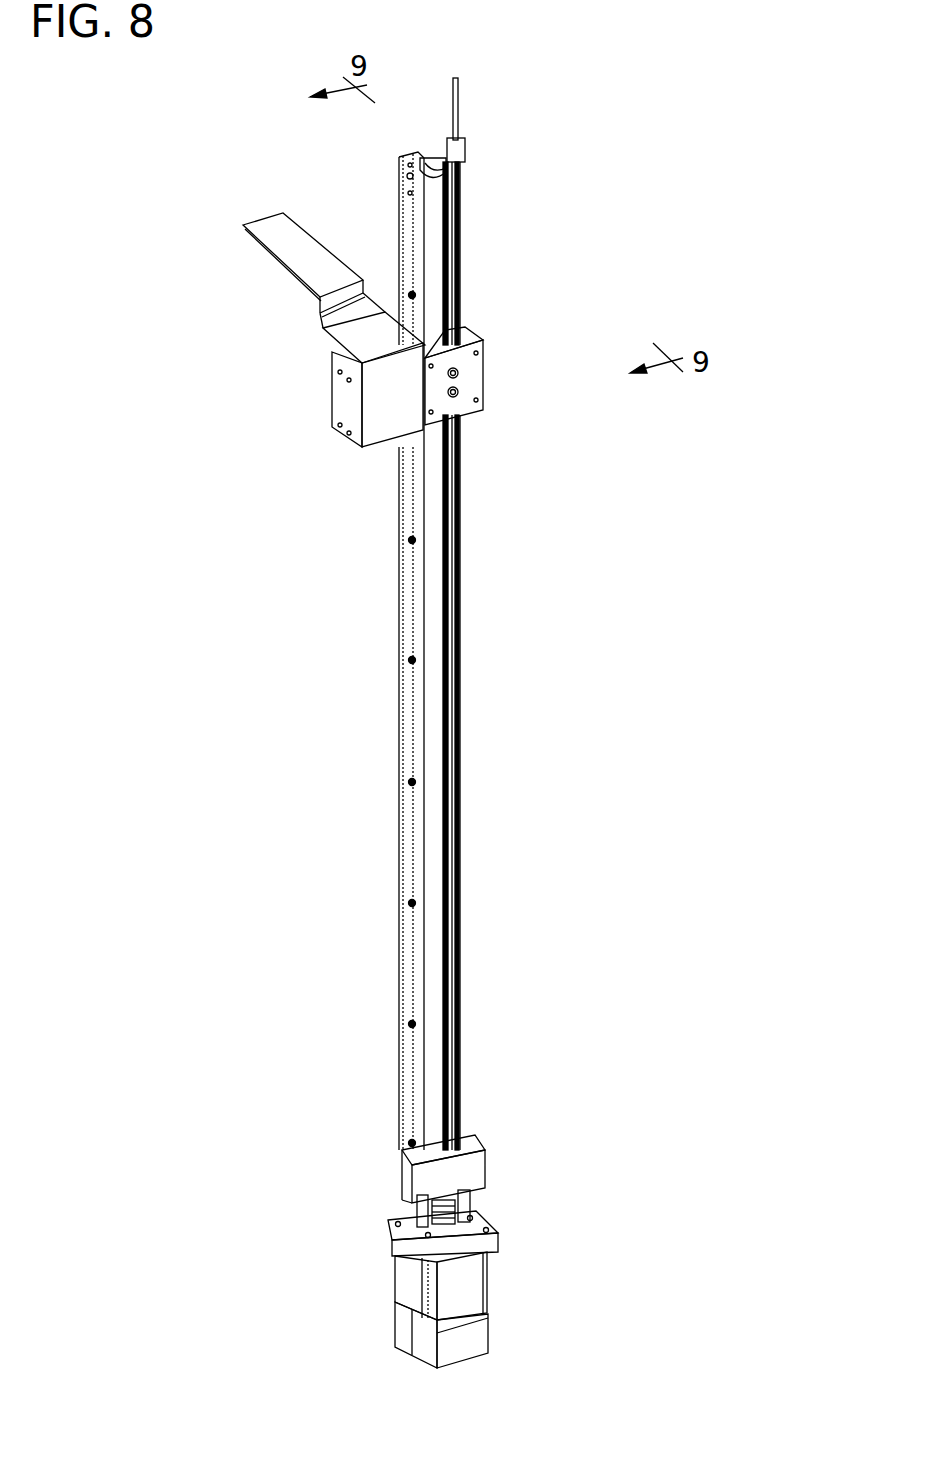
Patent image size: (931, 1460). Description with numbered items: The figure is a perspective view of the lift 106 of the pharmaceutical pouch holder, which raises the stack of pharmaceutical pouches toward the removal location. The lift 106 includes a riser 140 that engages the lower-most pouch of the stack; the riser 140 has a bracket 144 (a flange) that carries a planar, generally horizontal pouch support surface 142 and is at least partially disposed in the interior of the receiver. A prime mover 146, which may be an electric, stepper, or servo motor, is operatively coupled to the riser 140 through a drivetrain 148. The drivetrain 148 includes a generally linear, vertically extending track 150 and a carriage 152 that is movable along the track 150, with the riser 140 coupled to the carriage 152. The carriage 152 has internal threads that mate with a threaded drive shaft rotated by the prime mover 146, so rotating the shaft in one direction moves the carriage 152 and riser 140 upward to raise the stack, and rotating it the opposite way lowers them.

The lift 106 is at (735, 182).
The riser 140 is at (305, 412).
The pouch support surface 142 is at (280, 232).
The bracket 144 is at (323, 325).
The prime mover 146 is at (467, 1283).
The drivetrain 148 is at (478, 712).
The track 150 is at (432, 820).
The carriage 152 is at (470, 378).